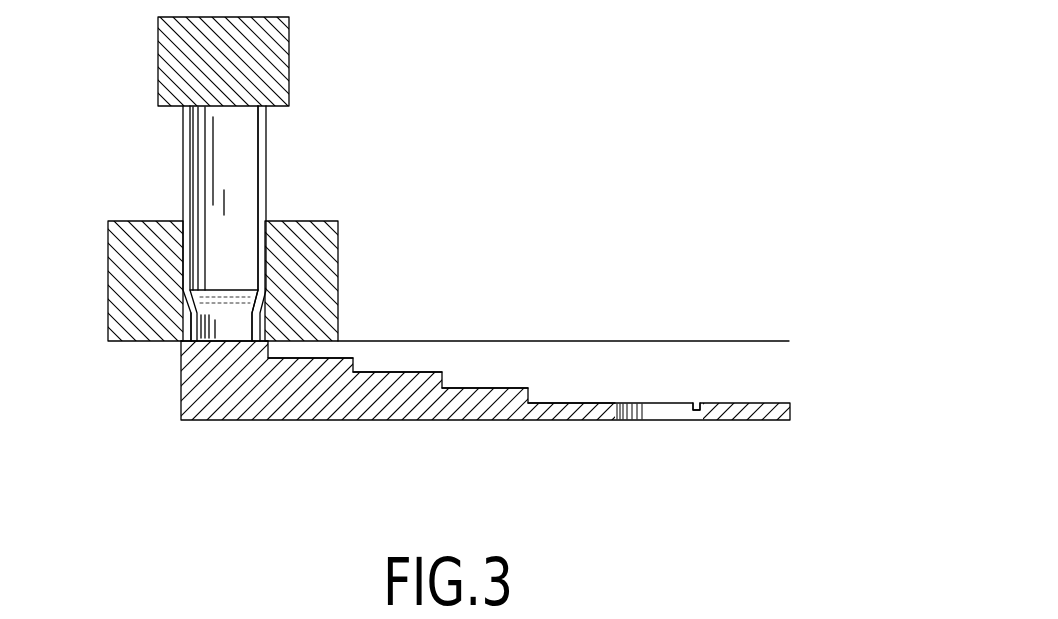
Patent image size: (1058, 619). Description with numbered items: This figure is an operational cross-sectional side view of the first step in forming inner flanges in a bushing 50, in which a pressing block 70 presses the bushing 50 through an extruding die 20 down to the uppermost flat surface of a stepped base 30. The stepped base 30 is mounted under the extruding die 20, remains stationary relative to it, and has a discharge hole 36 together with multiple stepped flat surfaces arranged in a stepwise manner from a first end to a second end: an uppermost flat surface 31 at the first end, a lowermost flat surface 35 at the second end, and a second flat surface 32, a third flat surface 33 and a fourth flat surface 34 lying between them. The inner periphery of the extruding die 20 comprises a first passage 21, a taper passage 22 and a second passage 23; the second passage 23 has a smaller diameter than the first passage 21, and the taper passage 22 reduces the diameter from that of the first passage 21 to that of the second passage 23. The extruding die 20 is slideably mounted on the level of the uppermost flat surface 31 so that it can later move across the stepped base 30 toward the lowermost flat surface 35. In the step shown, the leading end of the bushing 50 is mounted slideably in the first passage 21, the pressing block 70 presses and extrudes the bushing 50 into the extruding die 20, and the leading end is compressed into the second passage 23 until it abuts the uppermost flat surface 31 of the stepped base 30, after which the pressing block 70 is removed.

The pressing block 70 is at (272, 63).
The bushing 50 is at (185, 177).
The first passage 21 is at (260, 225).
The extruding die 20 is at (125, 272).
The taper passage 22 is at (260, 293).
The second passage 23 is at (190, 342).
The stepped base 30 is at (192, 403).
The uppermost flat surface 31 is at (242, 342).
The second flat surface 32 is at (333, 358).
The third flat surface 33 is at (402, 373).
The fourth flat surface 34 is at (500, 390).
The lowermost flat surface 35 is at (588, 405).
The discharge hole 36 is at (695, 410).